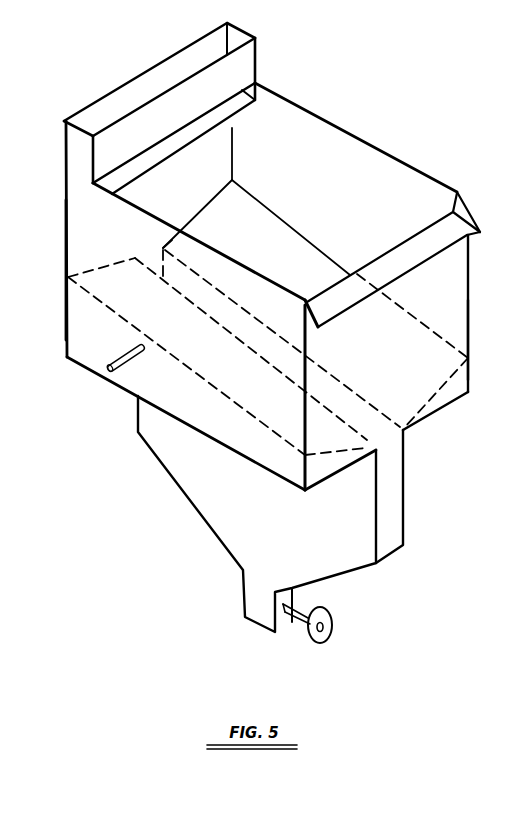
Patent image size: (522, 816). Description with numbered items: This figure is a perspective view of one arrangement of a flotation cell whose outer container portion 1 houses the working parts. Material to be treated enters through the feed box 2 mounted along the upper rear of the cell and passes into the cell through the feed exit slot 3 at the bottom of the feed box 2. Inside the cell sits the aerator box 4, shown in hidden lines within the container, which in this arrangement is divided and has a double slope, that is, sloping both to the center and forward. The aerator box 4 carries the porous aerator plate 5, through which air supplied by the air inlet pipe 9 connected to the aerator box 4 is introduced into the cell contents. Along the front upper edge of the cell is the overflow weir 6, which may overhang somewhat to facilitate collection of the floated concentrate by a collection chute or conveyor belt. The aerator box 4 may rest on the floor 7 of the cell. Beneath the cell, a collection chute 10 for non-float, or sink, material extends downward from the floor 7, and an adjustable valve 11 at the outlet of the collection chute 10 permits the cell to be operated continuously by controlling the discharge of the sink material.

The outer container portion 1 is at (343, 127).
The feed box 2 is at (162, 73).
The feed exit slot 3 is at (237, 108).
The aerator box 4 is at (92, 325).
The porous aerator plate 5 is at (113, 285).
The overflow weir 6 is at (453, 230).
The floor 7 is at (440, 410).
The air inlet pipe 9 is at (125, 366).
The collection chute 10 is at (193, 508).
The adjustable valve 11 is at (327, 643).